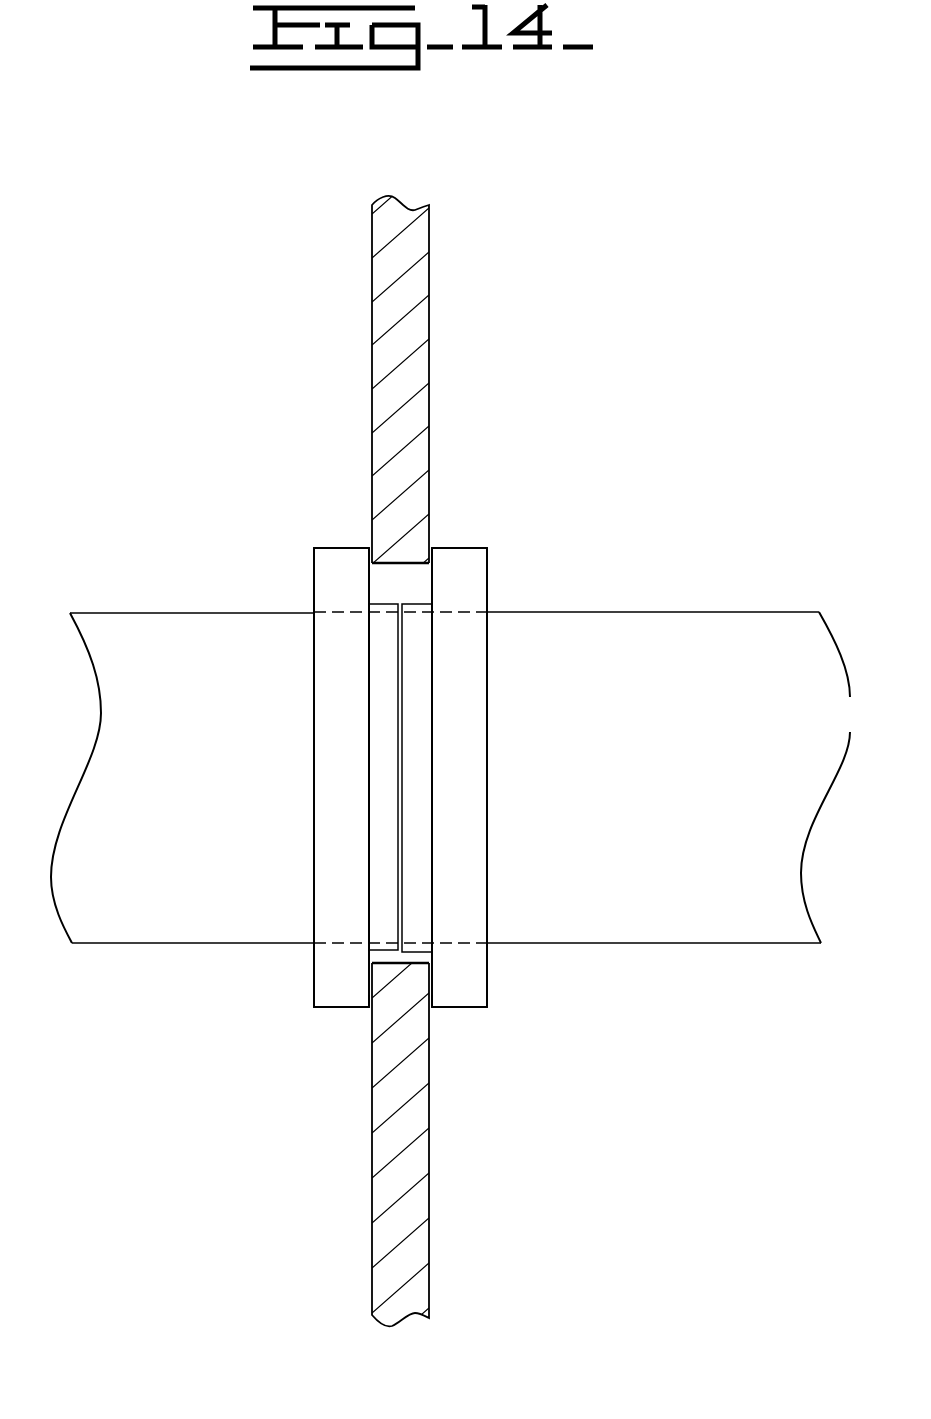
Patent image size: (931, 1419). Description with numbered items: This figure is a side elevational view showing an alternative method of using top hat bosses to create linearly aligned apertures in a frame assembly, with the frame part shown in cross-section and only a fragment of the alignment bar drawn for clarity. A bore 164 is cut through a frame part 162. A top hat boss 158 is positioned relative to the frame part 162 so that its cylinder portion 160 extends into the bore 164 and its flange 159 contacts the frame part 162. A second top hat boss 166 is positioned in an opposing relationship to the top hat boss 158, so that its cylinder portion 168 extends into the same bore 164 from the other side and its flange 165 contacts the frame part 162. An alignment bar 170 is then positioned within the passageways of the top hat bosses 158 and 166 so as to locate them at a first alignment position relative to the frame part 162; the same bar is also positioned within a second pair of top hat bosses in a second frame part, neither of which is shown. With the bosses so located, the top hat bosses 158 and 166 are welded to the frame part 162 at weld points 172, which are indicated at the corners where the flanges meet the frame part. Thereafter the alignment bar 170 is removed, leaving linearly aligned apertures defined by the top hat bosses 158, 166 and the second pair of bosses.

The top hat boss 158 is at (315, 528).
The flange 159 is at (335, 566).
The cylinder portion 160 is at (380, 886).
The frame part 162 is at (397, 212).
The bore 164 is at (397, 958).
The flange 165 is at (467, 570).
The second top hat boss 166 is at (485, 527).
The cylinder portion 168 is at (420, 889).
The alignment bar 170 is at (642, 903).
The weld points 172 is at (365, 538).